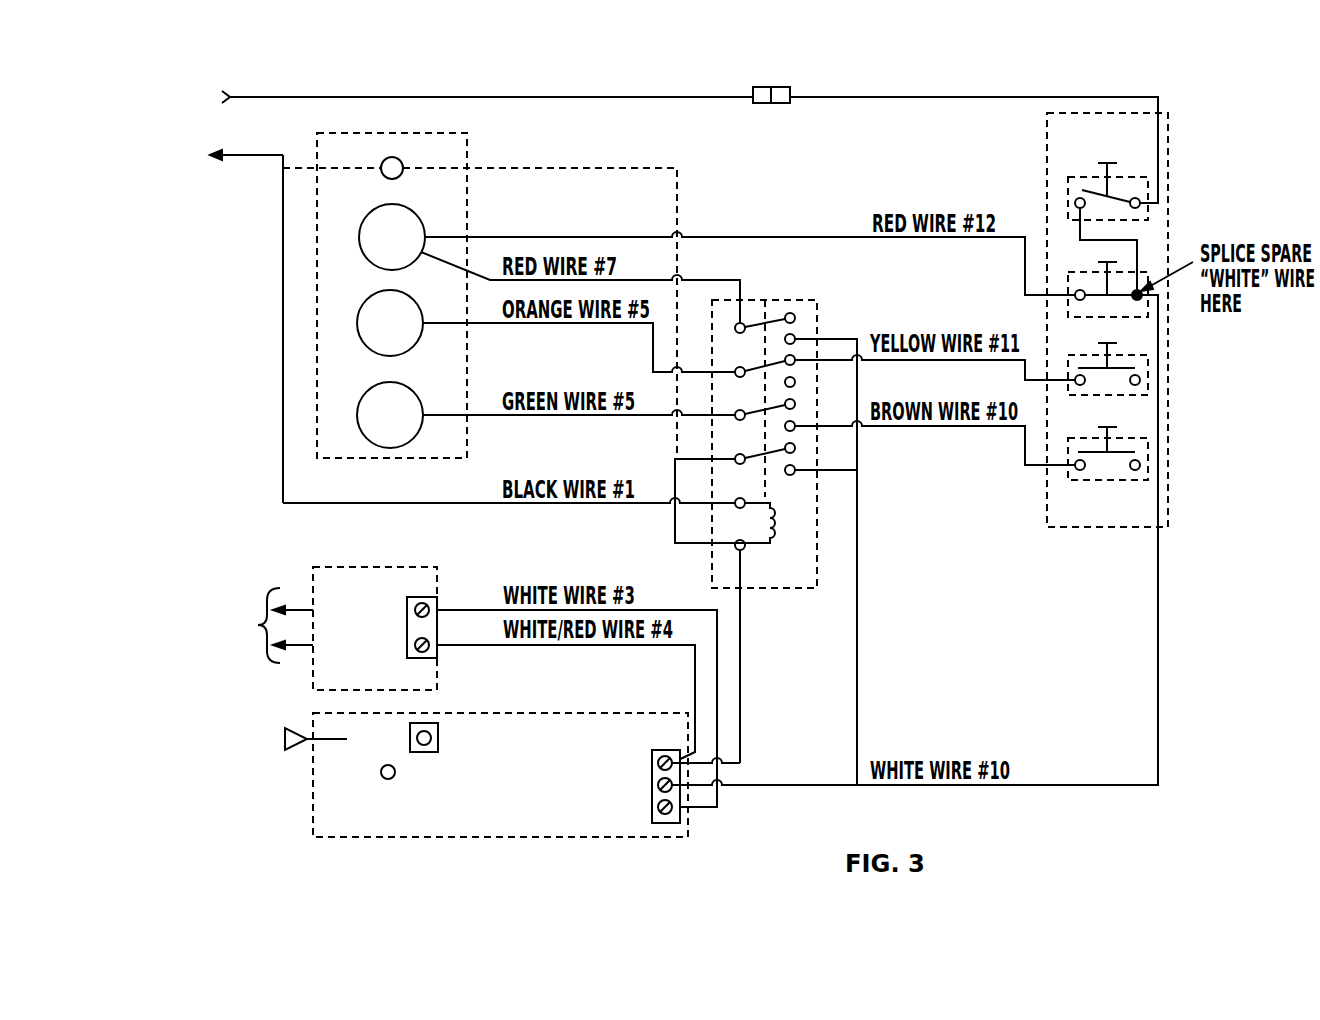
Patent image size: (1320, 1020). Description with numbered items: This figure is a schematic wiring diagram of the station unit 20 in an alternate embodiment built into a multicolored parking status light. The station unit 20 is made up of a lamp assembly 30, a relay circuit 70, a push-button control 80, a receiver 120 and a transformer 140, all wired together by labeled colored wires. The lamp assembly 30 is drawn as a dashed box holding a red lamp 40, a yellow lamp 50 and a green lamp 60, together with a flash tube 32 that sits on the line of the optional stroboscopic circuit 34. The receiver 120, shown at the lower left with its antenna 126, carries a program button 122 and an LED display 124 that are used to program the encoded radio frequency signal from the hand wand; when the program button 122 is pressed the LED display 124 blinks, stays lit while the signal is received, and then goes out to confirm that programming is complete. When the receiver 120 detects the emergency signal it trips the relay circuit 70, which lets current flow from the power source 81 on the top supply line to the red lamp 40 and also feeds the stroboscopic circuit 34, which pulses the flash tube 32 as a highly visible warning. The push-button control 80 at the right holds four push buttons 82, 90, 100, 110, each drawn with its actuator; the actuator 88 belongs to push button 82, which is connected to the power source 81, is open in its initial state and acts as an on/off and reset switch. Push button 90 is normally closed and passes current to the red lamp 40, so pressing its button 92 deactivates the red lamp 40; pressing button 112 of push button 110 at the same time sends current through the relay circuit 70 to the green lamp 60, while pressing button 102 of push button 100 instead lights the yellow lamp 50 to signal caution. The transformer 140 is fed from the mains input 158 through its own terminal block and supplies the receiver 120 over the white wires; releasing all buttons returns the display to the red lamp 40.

The station unit 20 is at (258, 425).
The lamp assembly 30 is at (317, 237).
The flash tube 32 is at (382, 175).
The stroboscopic circuit 34 is at (627, 140).
The red lamp 40 is at (359, 250).
The yellow lamp 50 is at (358, 322).
The green lamp 60 is at (358, 408).
The relay circuit 70 is at (820, 318).
The push-button control 80 is at (1168, 157).
The power source 81 is at (232, 96).
The push button 82 is at (1148, 215).
The first push button actuator 88 is at (1105, 160).
The push button 90 is at (1148, 300).
The button 92 is at (1105, 262).
The push button 100 is at (1148, 373).
The button 102 is at (1107, 345).
The push button 110 is at (1148, 443).
The button 112 is at (1107, 427).
The receiver 120 is at (617, 712).
The program button 122 is at (428, 755).
The LED display 124 is at (381, 775).
The antenna 126 is at (286, 738).
The transformer 140 is at (437, 578).
The 115 VAC power input 158 is at (268, 592).